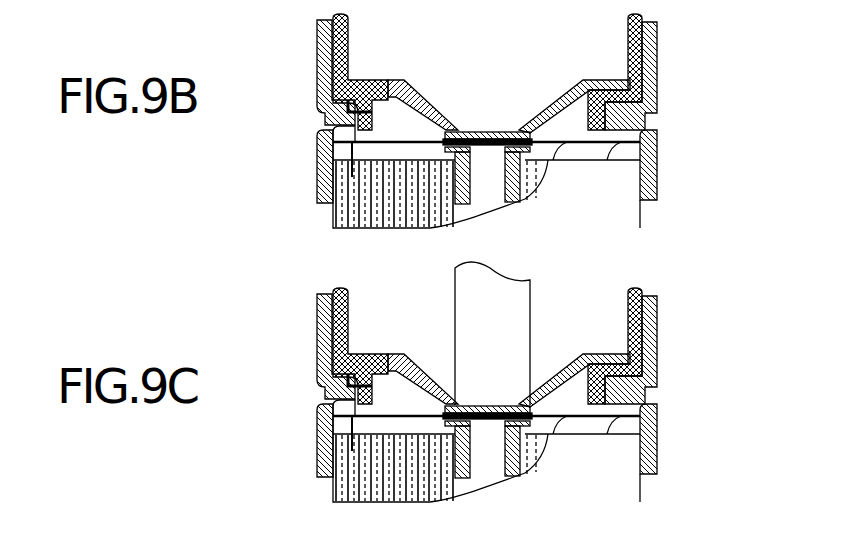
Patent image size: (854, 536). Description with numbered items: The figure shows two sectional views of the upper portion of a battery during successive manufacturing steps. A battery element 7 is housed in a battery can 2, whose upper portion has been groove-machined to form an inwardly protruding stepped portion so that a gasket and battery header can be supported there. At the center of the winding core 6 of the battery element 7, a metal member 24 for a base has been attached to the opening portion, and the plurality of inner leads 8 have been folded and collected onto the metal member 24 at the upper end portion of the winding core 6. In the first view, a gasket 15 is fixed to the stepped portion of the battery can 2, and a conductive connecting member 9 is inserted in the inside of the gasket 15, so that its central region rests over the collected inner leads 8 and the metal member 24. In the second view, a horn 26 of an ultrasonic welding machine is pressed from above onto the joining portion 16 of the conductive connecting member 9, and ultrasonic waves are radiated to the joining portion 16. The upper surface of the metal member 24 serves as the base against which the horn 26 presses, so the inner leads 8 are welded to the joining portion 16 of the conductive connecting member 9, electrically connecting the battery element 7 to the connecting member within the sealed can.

In FIG. 9B, the battery can 2 is at (657, 130).
In FIG. 9C, the battery can 2 is at (517, 398).
In FIG. 9C, the winding core 6 is at (550, 477).
In FIG. 9C, the battery element 7 is at (623, 444).
In FIG. 9C, the inner leads 8 is at (429, 476).
In FIG. 9B, the conductive connecting member 9 is at (548, 98).
In FIG. 9C, the conductive connecting member 9 is at (509, 351).
In FIG. 9B, the gasket 15 is at (346, 34).
In FIG. 9C, the joining portion 16 is at (462, 371).
In FIG. 9B, the metal member for the base 24 is at (478, 132).
In FIG. 9C, the metal member for the base 24 is at (487, 476).
In FIG. 9C, the horn 26 is at (458, 333).